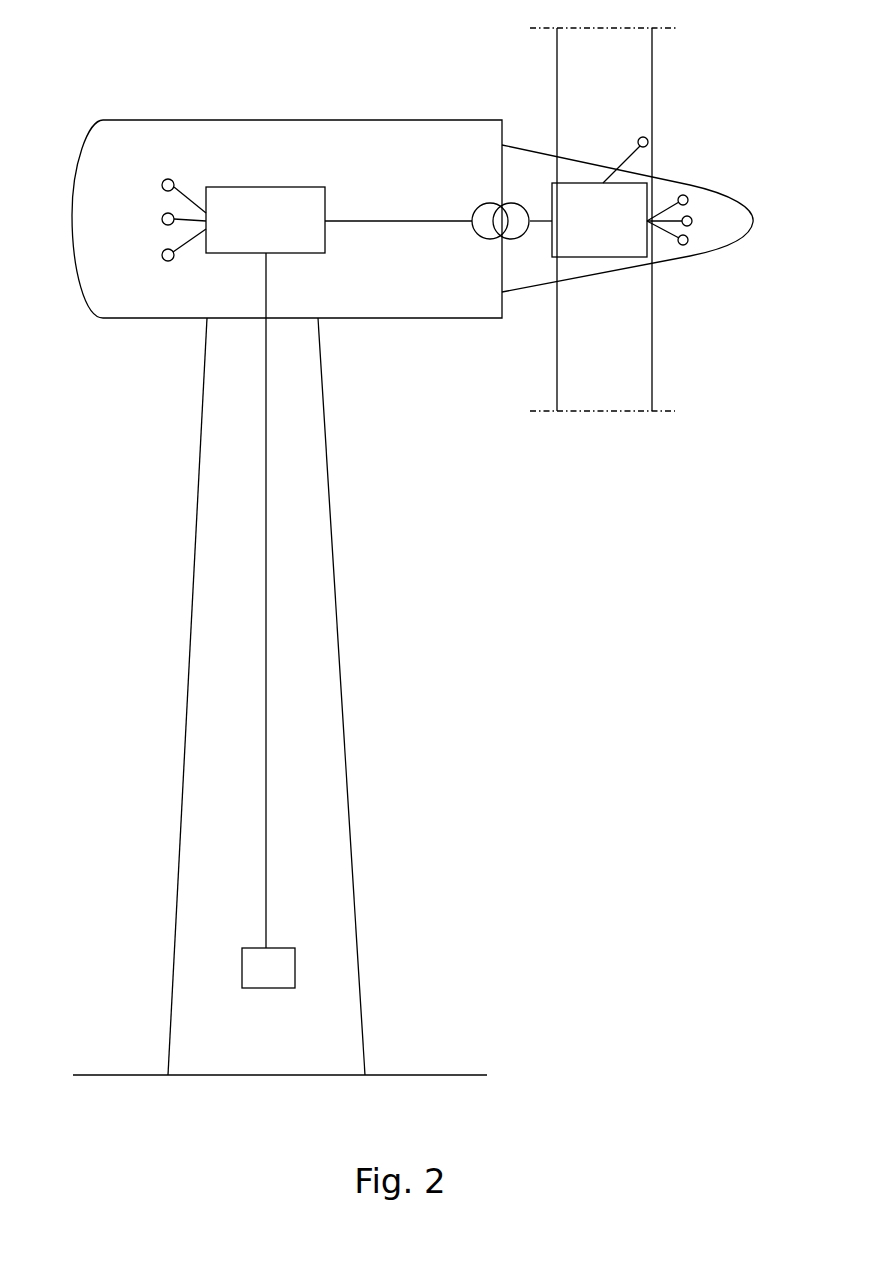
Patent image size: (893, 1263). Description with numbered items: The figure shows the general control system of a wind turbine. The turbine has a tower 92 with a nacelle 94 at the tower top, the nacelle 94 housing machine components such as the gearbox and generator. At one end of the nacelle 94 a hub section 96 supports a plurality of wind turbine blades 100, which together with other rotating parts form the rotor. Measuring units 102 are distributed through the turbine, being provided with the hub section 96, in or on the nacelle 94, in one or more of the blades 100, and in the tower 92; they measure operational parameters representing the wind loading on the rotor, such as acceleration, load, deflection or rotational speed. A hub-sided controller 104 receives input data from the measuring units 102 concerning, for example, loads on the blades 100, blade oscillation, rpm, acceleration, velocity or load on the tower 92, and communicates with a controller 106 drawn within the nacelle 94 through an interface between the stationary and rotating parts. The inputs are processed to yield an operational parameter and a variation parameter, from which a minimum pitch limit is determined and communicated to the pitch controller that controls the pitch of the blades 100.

The tower 92 is at (328, 789).
The nacelle 94 is at (245, 143).
The hub section 96 is at (522, 123).
The wind turbine blades 100 is at (637, 105).
The measuring units 102 is at (166, 249).
The hub-sided controller 104 is at (599, 220).
The main control unit 106 is at (265, 567).